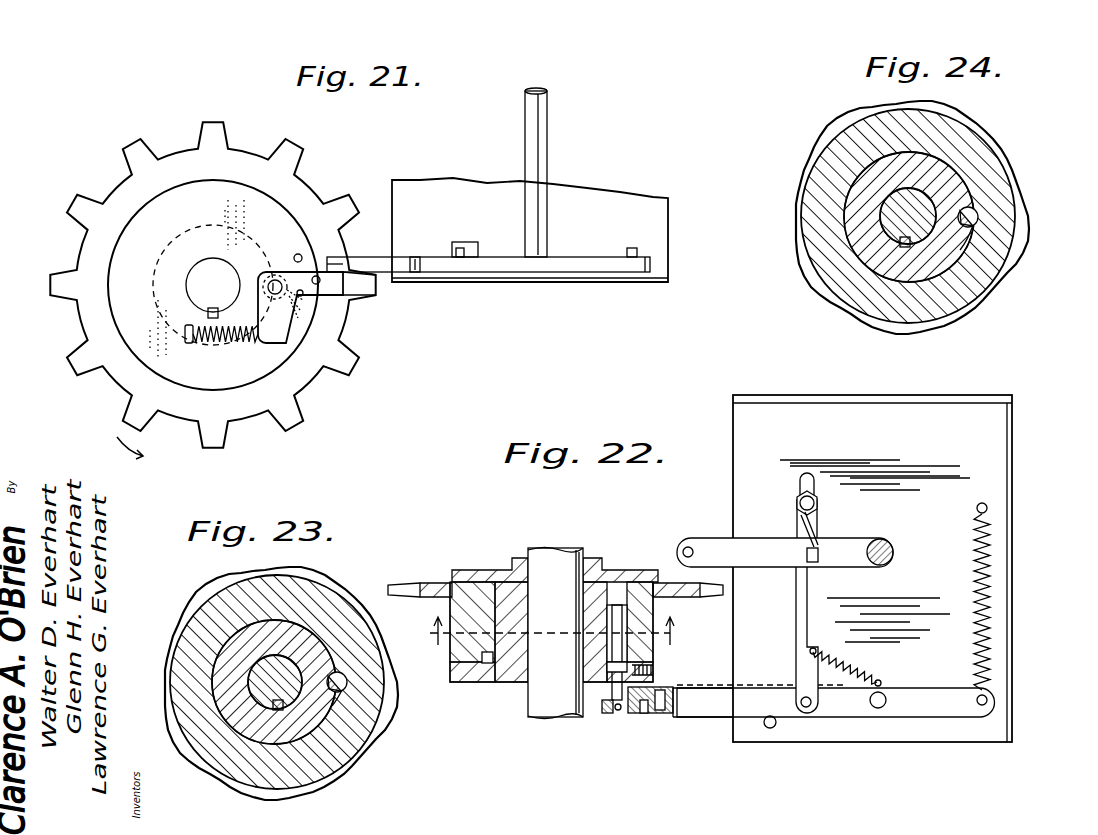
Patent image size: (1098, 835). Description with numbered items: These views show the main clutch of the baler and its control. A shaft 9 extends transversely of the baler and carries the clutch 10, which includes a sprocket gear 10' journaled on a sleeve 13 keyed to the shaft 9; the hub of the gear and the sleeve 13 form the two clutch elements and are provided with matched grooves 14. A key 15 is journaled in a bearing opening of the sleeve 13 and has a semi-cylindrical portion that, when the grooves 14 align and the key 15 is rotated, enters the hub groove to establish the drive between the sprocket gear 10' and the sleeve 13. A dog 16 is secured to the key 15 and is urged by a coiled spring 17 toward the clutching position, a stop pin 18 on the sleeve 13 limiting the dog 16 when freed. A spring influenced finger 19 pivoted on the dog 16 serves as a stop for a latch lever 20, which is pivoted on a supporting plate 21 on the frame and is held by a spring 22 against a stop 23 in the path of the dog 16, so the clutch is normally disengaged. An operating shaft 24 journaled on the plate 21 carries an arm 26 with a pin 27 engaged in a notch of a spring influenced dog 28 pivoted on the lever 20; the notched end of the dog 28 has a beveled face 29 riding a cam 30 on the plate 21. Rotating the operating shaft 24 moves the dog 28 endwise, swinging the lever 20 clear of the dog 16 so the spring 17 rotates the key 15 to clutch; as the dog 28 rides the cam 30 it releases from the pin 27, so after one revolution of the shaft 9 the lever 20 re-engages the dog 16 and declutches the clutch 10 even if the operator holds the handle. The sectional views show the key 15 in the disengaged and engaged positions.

In FIG. 21, the shaft 9 is at (213, 285).
In FIG. 24, the shaft 9 is at (890, 213).
In FIG. 22, the shaft 9 is at (555, 633).
In FIG. 21, the clutch 10 is at (212, 290).
In FIG. 21, the sprocket gear 10' is at (367, 304).
In FIG. 24, the sprocket gear 10' is at (912, 214).
In FIG. 23, the sprocket gear 10' is at (281, 675).
In FIG. 22, the sprocket gear 10' is at (555, 568).
In FIG. 21, the sleeve 13 is at (273, 217).
In FIG. 24, the sleeve 13 is at (858, 228).
In FIG. 23, the sleeve 13 is at (257, 737).
In FIG. 24, the matched grooves 14 is at (973, 212).
In FIG. 23, the matched grooves 14 is at (345, 678).
In FIG. 24, the key 15 is at (963, 252).
In FIG. 23, the key 15 is at (332, 700).
In FIG. 22, the key 15 is at (610, 713).
In FIG. 21, the dog 16 is at (273, 337).
In FIG. 22, the dog 16 is at (663, 713).
In FIG. 21, the coiled spring 17 is at (227, 342).
In FIG. 21, the stop pin 18 is at (299, 254).
In FIG. 22, the stop pin 18 is at (602, 593).
In FIG. 21, the spring influenced finger 19 is at (322, 300).
In FIG. 22, the spring influenced finger 19 is at (670, 690).
In FIG. 21, the latch lever 20 is at (505, 267).
In FIG. 22, the latch lever 20 is at (907, 694).
In FIG. 21, the supporting plate 21 is at (567, 282).
In FIG. 22, the supporting plate 21 is at (1005, 480).
In FIG. 22, the spring 22 is at (985, 593).
In FIG. 21, the stop 23 is at (418, 257).
In FIG. 22, the stop 23 is at (769, 728).
In FIG. 21, the operating shaft 24 is at (539, 127).
In FIG. 22, the operating shaft 24 is at (891, 550).
In FIG. 22, the arm 26 is at (862, 547).
In FIG. 22, the pin 27 is at (818, 562).
In FIG. 21, the spring influenced dog 28 is at (461, 250).
In FIG. 22, the spring influenced dog 28 is at (798, 623).
In FIG. 22, the beveled face 29 is at (815, 527).
In FIG. 22, the cam 30 is at (817, 505).